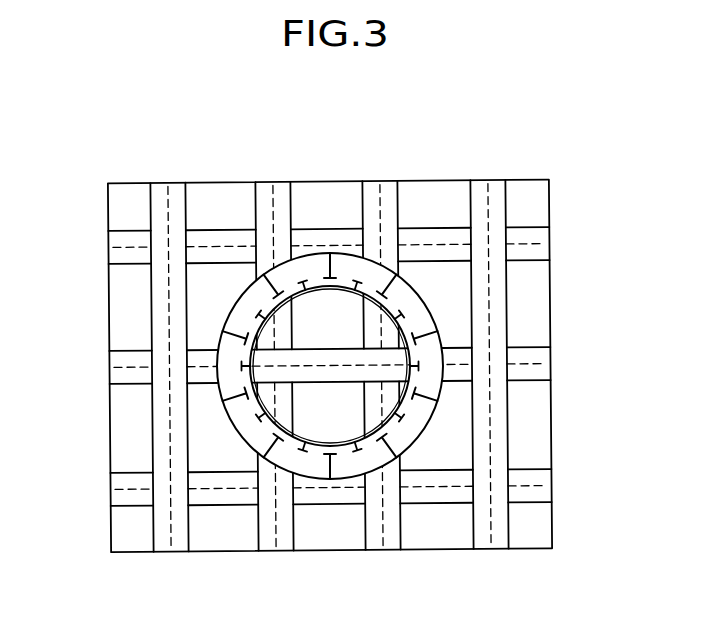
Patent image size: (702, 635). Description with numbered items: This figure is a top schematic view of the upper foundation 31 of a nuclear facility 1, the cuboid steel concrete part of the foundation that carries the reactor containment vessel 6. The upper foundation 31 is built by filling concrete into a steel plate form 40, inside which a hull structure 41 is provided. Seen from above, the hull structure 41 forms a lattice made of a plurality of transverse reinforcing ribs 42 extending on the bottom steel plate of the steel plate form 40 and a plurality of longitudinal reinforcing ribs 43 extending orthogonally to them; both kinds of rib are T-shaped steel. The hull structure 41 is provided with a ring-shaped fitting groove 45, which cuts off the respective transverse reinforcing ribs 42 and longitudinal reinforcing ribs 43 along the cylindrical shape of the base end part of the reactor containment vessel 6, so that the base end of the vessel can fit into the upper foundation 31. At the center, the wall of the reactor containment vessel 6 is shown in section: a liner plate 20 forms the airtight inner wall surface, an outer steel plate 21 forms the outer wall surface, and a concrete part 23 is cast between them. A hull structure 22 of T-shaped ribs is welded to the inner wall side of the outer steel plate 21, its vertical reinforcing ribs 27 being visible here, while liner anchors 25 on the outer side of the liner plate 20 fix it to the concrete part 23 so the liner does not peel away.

The nuclear facility 1 is at (572, 148).
The reactor containment vessel 6 is at (315, 253).
The liner plate 20 is at (290, 287).
The outer steel plate 21 is at (224, 329).
The hull structure 22 is at (236, 379).
The concrete part 23 is at (240, 312).
The liner anchors 25 is at (318, 468).
The vertical reinforcing ribs 27 is at (397, 290).
The upper foundation 31 is at (565, 297).
The steel plate form 40 is at (107, 336).
The hull structure 41 is at (137, 283).
The transverse reinforcing ribs 42 is at (395, 537).
The longitudinal reinforcing ribs 43 is at (545, 374).
The fitting groove 45 is at (238, 440).